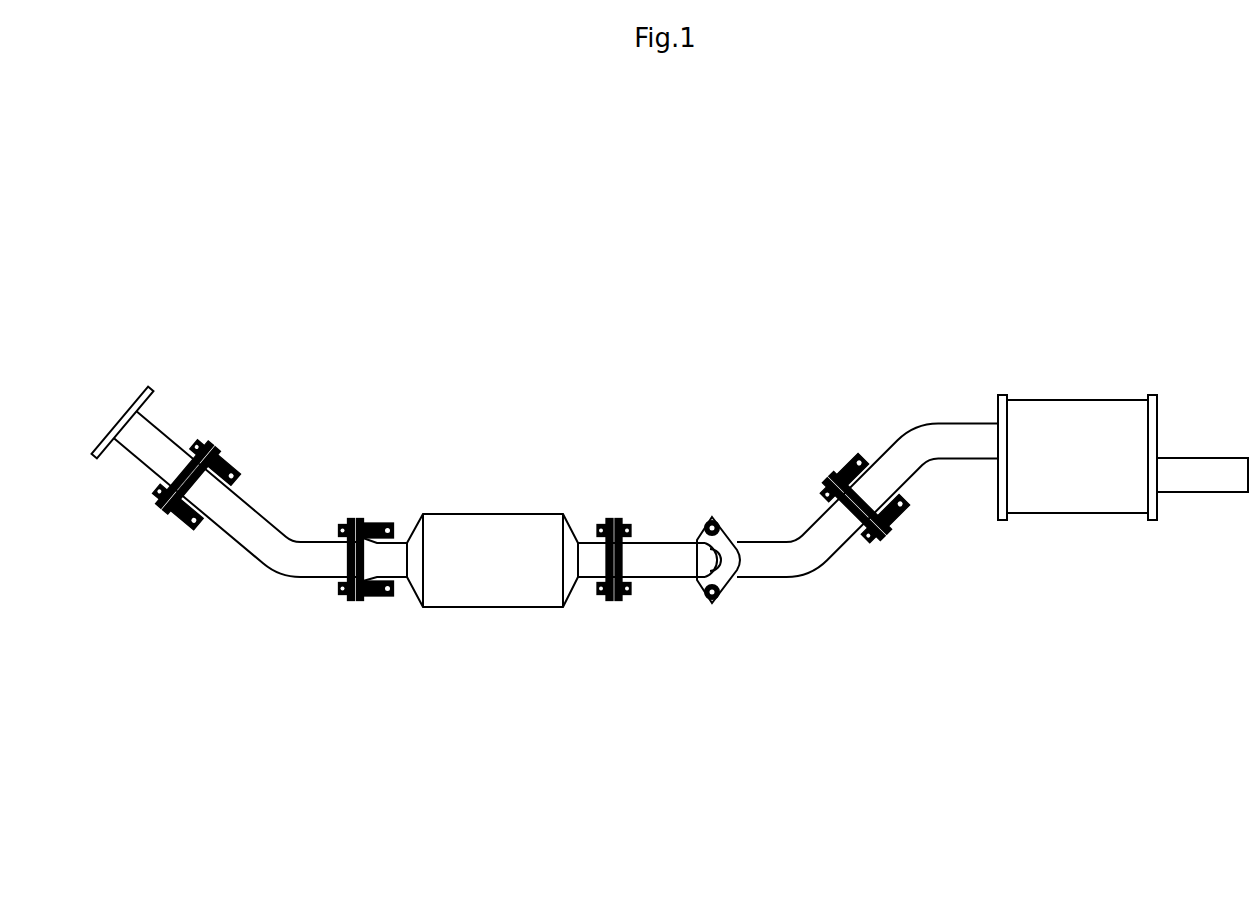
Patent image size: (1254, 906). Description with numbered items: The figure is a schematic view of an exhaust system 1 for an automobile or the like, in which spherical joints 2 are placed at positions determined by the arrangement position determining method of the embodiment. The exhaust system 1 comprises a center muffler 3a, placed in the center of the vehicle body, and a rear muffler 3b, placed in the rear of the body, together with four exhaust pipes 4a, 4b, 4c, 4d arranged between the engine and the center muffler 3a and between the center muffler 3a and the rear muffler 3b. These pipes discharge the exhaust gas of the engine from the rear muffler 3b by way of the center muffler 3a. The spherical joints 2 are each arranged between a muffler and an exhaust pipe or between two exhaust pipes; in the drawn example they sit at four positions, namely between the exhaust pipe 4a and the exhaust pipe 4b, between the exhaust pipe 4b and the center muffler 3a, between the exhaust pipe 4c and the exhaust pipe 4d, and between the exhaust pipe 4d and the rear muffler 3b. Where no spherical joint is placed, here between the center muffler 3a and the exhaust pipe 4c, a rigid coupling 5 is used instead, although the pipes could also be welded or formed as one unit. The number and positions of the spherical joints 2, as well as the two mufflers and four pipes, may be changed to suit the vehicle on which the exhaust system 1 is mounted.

The exhaust system 1 is at (1076, 190).
The spherical joint 2 is at (168, 510).
The center muffler 3a is at (497, 514).
The rear muffler 3b is at (1083, 400).
The exhaust pipe 4a is at (160, 428).
The exhaust pipe 4b is at (267, 517).
The exhaust pipe 4c is at (668, 542).
The exhaust pipe 4d is at (800, 540).
The rigid coupling 5 is at (610, 602).